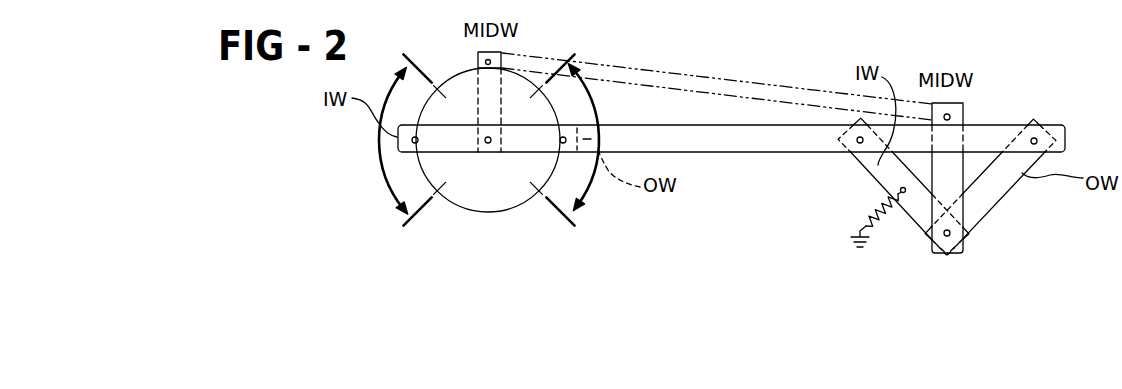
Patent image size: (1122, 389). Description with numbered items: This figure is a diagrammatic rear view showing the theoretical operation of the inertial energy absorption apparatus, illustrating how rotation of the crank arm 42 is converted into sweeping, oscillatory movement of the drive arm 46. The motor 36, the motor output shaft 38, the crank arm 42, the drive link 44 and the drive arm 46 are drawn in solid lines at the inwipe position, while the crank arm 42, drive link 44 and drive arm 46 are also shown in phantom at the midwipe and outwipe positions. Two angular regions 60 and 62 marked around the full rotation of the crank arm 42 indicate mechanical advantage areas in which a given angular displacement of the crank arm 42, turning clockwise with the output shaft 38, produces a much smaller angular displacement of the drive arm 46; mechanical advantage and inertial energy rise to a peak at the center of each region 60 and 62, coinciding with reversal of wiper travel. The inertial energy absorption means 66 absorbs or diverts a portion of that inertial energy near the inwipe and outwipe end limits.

The motor 36 is at (520, 190).
The motor output shaft 38 is at (487, 139).
The crank arm 42 is at (463, 150).
The drive link 44 is at (757, 143).
The drive arm 46 is at (890, 175).
The region 60 is at (591, 192).
The region 62 is at (383, 166).
The inertial energy absorption means 66 is at (880, 222).